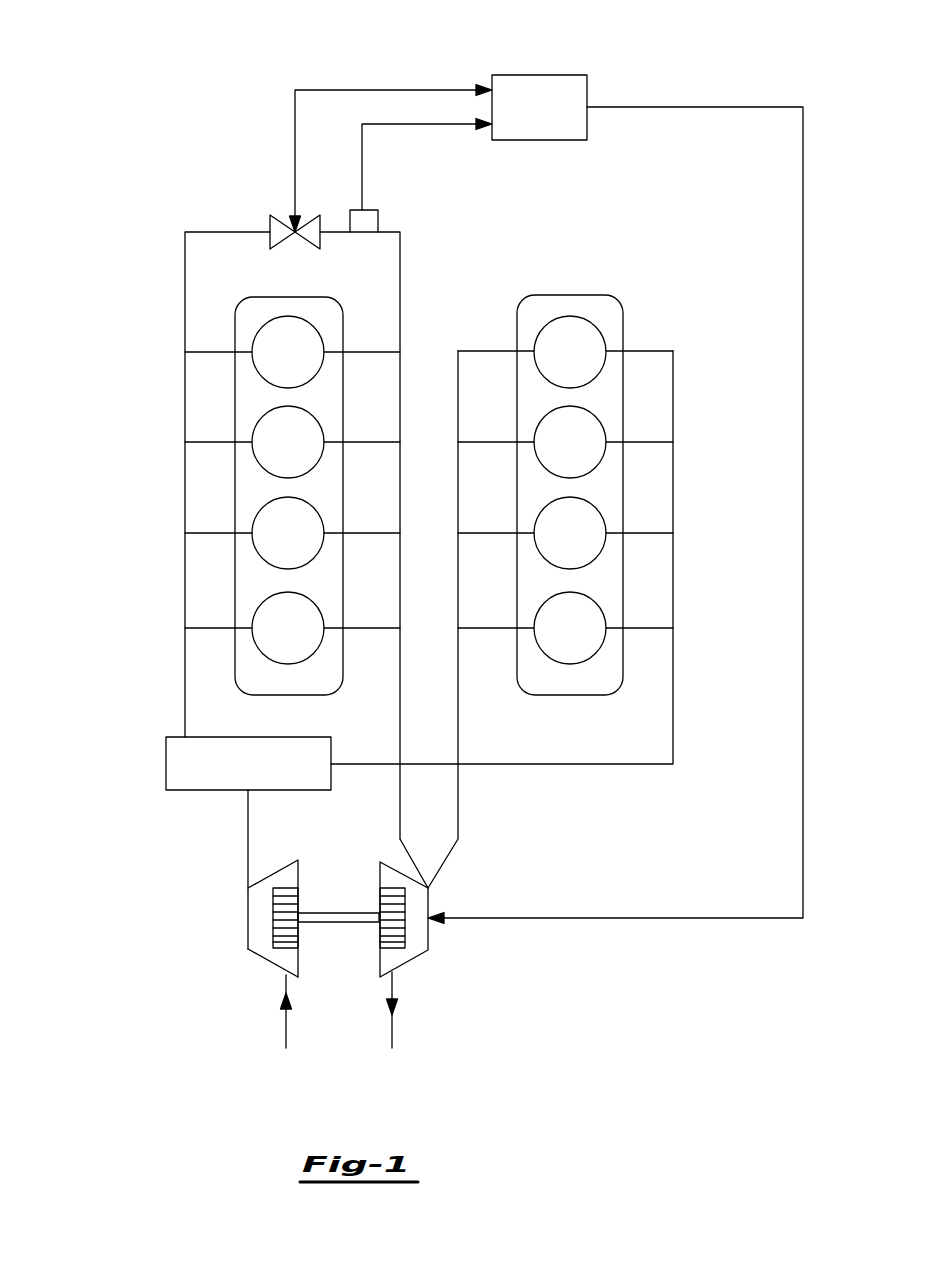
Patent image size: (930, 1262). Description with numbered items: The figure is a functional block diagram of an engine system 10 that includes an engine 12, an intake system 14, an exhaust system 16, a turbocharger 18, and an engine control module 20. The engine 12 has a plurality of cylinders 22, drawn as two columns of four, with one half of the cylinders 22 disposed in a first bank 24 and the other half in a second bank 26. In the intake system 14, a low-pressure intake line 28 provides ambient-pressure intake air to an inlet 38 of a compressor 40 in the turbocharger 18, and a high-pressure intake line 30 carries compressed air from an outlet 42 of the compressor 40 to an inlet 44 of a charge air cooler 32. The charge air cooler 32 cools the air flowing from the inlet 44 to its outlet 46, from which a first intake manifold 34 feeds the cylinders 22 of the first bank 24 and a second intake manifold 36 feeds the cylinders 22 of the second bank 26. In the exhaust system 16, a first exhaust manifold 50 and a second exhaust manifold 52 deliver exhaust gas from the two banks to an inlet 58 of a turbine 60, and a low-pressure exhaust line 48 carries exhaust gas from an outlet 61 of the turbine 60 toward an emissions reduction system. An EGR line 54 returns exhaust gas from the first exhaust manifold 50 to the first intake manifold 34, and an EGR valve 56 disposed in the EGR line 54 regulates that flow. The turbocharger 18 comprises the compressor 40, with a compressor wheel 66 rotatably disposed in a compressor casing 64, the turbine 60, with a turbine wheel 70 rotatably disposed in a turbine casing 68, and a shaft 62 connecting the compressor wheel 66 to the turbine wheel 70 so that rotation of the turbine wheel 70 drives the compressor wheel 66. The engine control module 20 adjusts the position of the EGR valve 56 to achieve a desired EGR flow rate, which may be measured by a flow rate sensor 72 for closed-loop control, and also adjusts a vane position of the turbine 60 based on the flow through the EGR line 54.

The engine system 10 is at (137, 55).
The engine 12 is at (669, 238).
The intake system 14 is at (139, 240).
The exhaust system 16 is at (474, 255).
The turbocharger 18 is at (143, 879).
The engine control module 20 is at (572, 75).
The cylinders 22 is at (258, 378).
The first bank 24 is at (343, 333).
The second bank 26 is at (625, 320).
The low-pressure intake line 28 is at (286, 1032).
The high-pressure intake line 30 is at (248, 826).
The charge air cooler 32 is at (166, 765).
The first intake manifold 34 is at (158, 583).
The second intake manifold 36 is at (691, 503).
The compressor inlet 38 is at (283, 972).
The compressor 40 is at (205, 931).
The compressor outlet 42 is at (248, 888).
The CAC inlet 44 is at (243, 792).
The CAC outlet 46 is at (185, 736).
The low-pressure exhaust line 48 is at (392, 1035).
The first exhaust manifold 50 is at (411, 613).
The second exhaust manifold 52 is at (449, 501).
The EGR line 54 is at (212, 232).
The EGR valve 56 is at (278, 222).
The turbine inlet 58 is at (432, 885).
The turbine 60 is at (489, 891).
The turbine outlet 61 is at (393, 972).
The shaft 62 is at (325, 924).
The compressor casing 64 is at (258, 950).
The compressor wheel 66 is at (283, 888).
The turbine casing 68 is at (425, 953).
The turbine wheel 70 is at (385, 888).
The flow rate sensor 72 is at (378, 220).